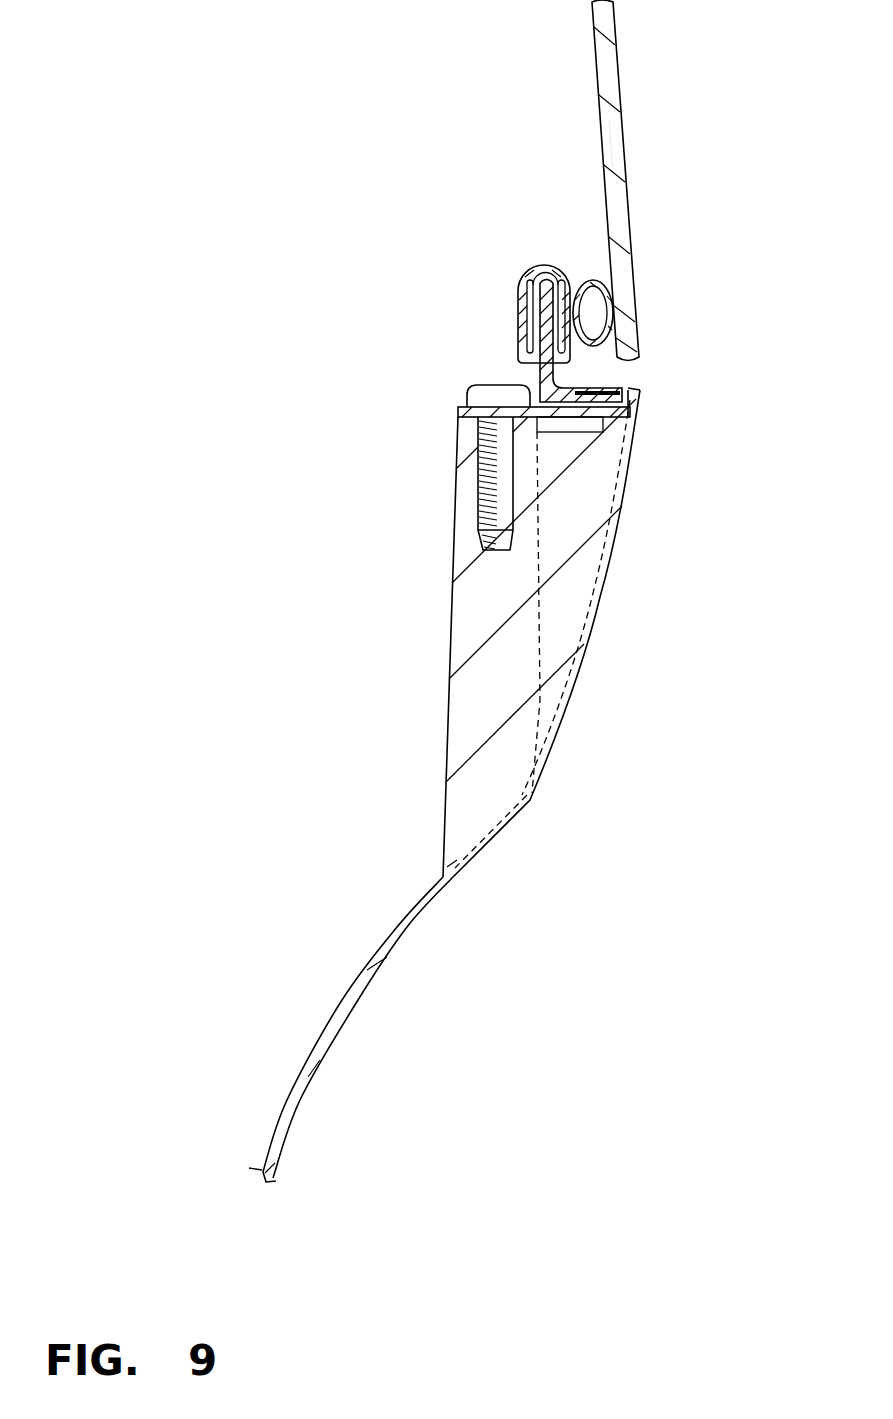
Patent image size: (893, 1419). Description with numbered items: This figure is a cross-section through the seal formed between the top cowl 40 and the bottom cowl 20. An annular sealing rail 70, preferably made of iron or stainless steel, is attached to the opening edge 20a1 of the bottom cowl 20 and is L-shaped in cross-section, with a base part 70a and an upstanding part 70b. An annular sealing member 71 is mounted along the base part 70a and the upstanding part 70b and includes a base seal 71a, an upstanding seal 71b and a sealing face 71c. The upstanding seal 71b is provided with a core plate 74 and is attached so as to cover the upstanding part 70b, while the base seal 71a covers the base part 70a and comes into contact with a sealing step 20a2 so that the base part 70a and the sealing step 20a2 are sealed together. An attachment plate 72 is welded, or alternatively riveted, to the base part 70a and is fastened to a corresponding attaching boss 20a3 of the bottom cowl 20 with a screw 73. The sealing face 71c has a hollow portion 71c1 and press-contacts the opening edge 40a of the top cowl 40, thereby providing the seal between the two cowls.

The top cowl 40 is at (658, 180).
The opening edge 40a is at (613, 145).
The annular sealing member 71 is at (557, 273).
The base seal 71a is at (610, 393).
The upstanding seal 71b is at (484, 298).
The sealing face 71c is at (563, 248).
The hollow portion 71c1 is at (595, 300).
The annular sealing rail 70 is at (547, 431).
The base part 70a is at (552, 417).
The upstanding part 70b is at (547, 315).
The attachment plate 72 is at (458, 413).
The screw 73 is at (482, 491).
The core plate 74 is at (523, 333).
The bottom cowl 20 is at (504, 785).
The opening edge 20a1 is at (647, 388).
The sealing step 20a2 is at (617, 440).
The attaching boss 20a3 is at (467, 594).